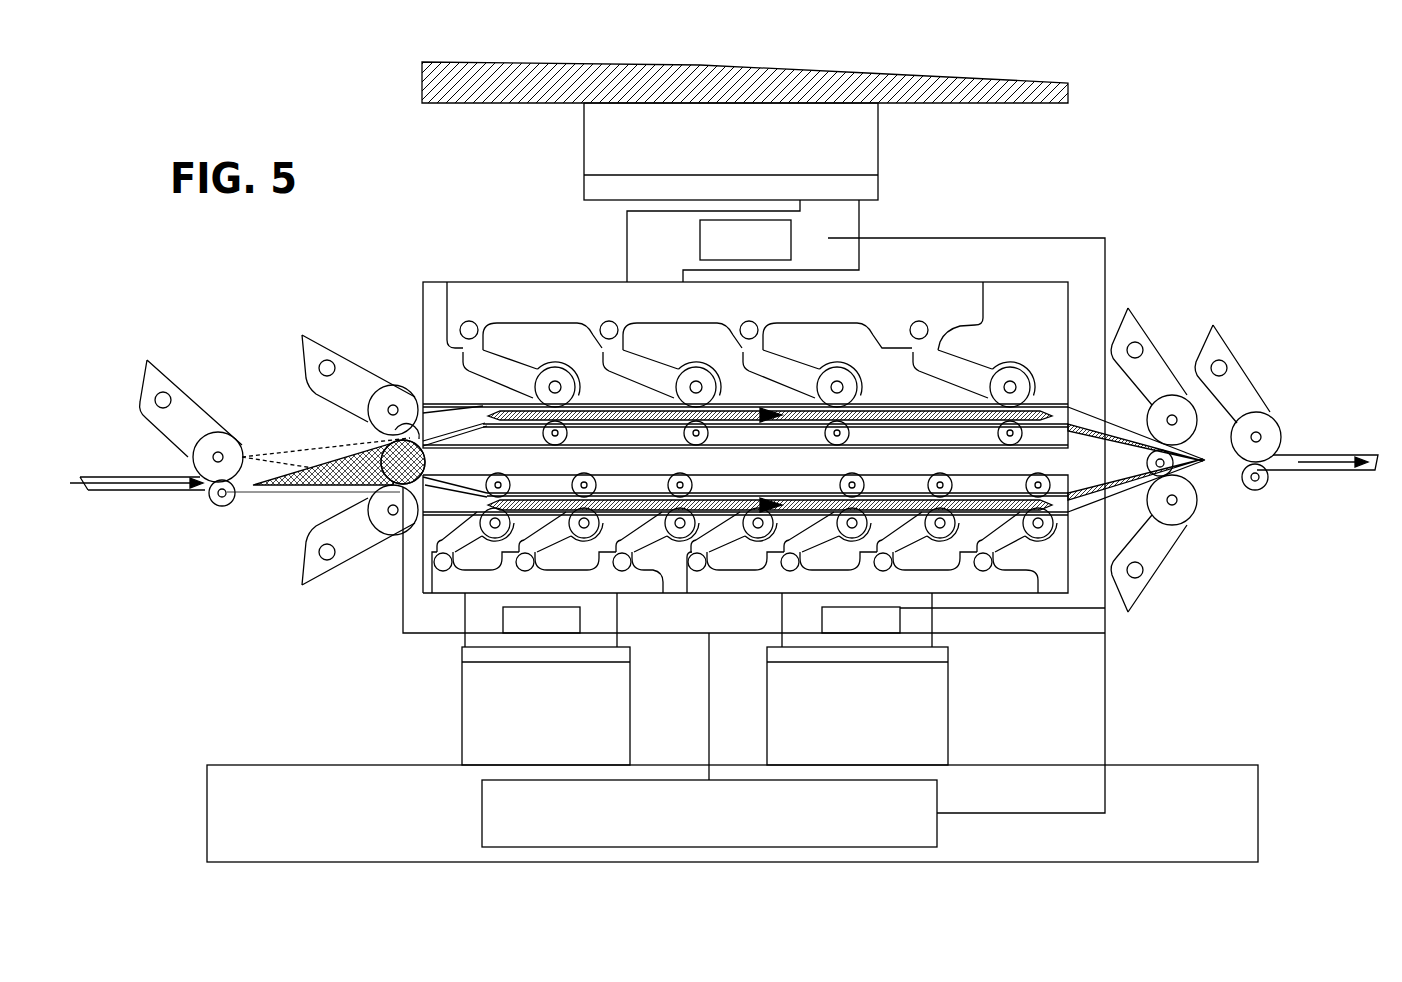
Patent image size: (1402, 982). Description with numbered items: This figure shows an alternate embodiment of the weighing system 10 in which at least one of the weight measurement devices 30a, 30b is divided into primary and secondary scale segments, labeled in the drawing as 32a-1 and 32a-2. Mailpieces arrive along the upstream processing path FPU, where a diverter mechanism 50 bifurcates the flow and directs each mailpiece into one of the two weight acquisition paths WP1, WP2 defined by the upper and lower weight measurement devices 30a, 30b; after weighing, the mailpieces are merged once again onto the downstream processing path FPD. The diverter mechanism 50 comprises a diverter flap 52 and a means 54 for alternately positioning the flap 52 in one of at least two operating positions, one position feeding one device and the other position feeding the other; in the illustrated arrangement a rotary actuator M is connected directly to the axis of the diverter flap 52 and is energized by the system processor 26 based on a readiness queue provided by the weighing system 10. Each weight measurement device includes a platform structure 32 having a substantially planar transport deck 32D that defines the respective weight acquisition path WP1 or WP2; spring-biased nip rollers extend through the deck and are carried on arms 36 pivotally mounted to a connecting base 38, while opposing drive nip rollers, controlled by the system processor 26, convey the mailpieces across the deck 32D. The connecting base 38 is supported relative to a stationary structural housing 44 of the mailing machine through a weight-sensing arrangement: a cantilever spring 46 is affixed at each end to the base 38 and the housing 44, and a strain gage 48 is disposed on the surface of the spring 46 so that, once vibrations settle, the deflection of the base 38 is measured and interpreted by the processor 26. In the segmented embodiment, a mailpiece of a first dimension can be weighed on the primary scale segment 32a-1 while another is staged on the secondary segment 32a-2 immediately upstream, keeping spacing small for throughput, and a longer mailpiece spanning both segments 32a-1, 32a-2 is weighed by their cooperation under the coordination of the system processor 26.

The weighing system 10 is at (185, 739).
The system processor 26 is at (502, 793).
The upper weight measurement device 30a is at (432, 680).
The lower weight measurement device 30b is at (148, 690).
The platform structure 32 is at (432, 362).
The transport deck 32D is at (497, 413).
The first lower transport unit 32a-1 is at (879, 591).
The second lower transport unit 32a-2 is at (584, 591).
The arms 36 is at (668, 490).
The connecting base 38 is at (770, 312).
The stationary structural housing 44 is at (905, 92).
The cantilever spring 46 is at (736, 254).
The strain gage 48 is at (642, 256).
The diverter mechanism 50 is at (333, 588).
The diverter flap 52 is at (380, 457).
The means for alternately positioning the flap 54 is at (385, 531).
The rotary actuator M is at (395, 485).
The first weight acquisition path WP1 is at (728, 505).
The second weight acquisition path WP2 is at (745, 418).
The upstream processing path FPU is at (122, 483).
The downstream processing path FPD is at (1322, 472).